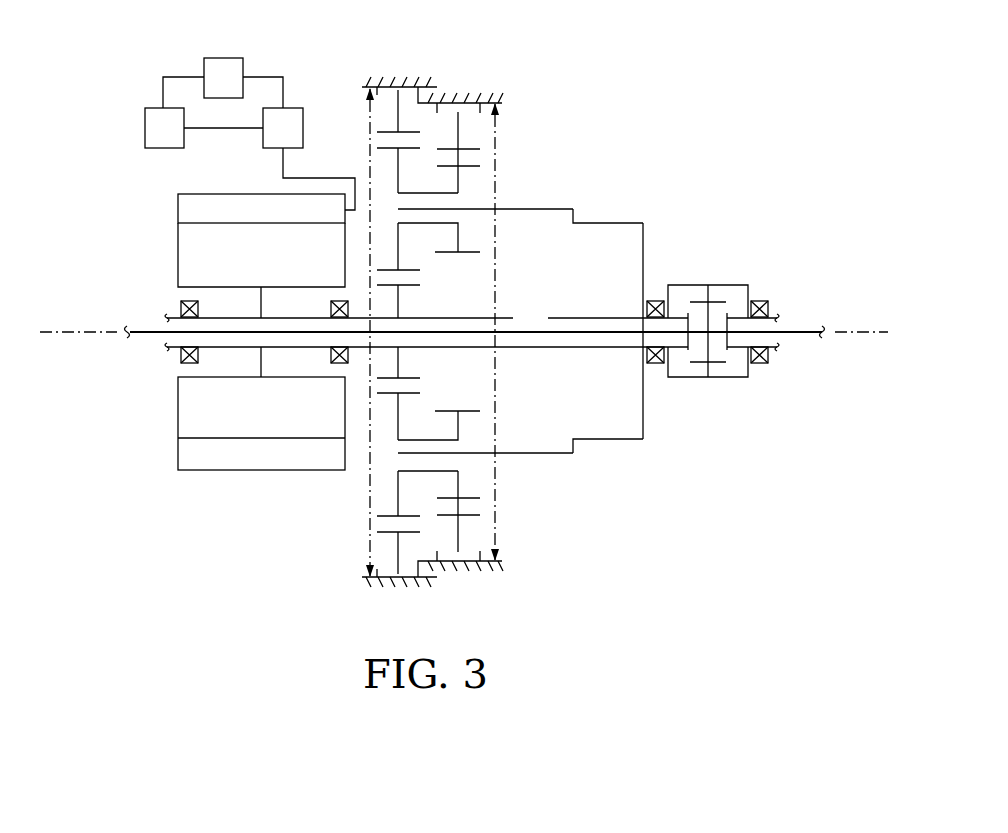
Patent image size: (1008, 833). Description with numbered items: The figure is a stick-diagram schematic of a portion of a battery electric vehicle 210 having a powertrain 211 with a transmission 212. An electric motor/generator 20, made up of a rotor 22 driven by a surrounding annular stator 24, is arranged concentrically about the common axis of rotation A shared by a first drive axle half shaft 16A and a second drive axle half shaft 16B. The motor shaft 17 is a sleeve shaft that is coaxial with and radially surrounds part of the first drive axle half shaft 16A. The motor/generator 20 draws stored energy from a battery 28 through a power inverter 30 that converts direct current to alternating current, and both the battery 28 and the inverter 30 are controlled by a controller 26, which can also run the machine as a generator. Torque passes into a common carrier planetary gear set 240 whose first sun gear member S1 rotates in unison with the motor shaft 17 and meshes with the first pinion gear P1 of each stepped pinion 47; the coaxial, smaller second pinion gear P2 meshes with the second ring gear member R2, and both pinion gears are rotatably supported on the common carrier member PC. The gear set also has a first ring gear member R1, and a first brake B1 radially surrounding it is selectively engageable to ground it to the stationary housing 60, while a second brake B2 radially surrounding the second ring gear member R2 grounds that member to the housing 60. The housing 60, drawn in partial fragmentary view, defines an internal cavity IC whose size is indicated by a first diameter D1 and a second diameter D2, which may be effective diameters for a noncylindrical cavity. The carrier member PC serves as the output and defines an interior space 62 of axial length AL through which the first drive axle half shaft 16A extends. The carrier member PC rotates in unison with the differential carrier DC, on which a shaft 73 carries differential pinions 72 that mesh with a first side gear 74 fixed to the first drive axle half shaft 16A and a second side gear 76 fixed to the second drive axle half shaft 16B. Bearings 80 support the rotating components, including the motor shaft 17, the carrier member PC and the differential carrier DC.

The battery electric vehicle 210 is at (200, 106).
The controller 26 is at (222, 58).
The battery 28 is at (160, 108).
The power inverter 30 is at (292, 108).
The electric motor/generator 20 is at (203, 320).
The annular stator 24 is at (178, 210).
The rotor 22 is at (178, 257).
The motor shaft 17 is at (278, 316).
The first drive axle half shaft 16A is at (147, 332).
The second drive axle half shaft 16B is at (797, 332).
The axis of rotation A is at (70, 332).
The bearings 80 is at (198, 354).
The stationary housing 60 is at (466, 95).
The first brake B1 is at (392, 105).
The second brake B2 is at (467, 121).
The first ring gear member R1 is at (400, 130).
The second ring gear member R2 is at (467, 140).
The stepped pinion 47 is at (430, 209).
The carrier member PC is at (565, 209).
The first pinion gear P1 is at (405, 270).
The second pinion gear P2 is at (468, 252).
The first sun gear member S1 is at (398, 288).
The axial length AL is at (641, 318).
The second diameter D2 is at (370, 527).
The first diameter D1 is at (495, 500).
The powertrain 211 is at (533, 50).
The internal cavity IC is at (522, 118).
The transmission 212 is at (652, 138).
The common carrier planetary gear set 240 is at (357, 489).
The interior space 62 is at (601, 246).
The differential carrier DC is at (690, 284).
The differential pinions 72 is at (716, 300).
The first side gear 74 is at (692, 316).
The second side gear 76 is at (727, 316).
The shaft 73 is at (703, 350).